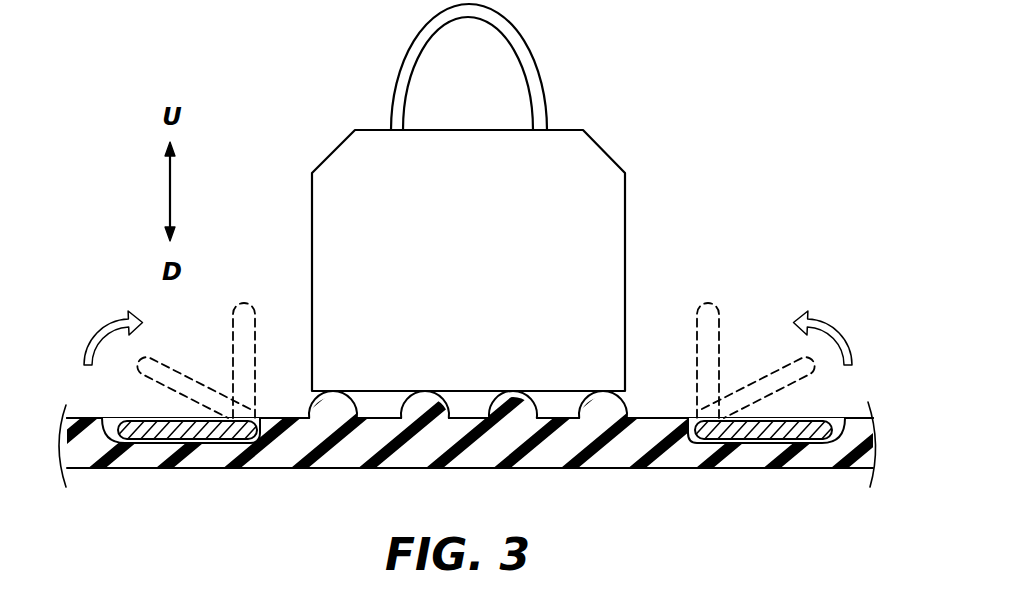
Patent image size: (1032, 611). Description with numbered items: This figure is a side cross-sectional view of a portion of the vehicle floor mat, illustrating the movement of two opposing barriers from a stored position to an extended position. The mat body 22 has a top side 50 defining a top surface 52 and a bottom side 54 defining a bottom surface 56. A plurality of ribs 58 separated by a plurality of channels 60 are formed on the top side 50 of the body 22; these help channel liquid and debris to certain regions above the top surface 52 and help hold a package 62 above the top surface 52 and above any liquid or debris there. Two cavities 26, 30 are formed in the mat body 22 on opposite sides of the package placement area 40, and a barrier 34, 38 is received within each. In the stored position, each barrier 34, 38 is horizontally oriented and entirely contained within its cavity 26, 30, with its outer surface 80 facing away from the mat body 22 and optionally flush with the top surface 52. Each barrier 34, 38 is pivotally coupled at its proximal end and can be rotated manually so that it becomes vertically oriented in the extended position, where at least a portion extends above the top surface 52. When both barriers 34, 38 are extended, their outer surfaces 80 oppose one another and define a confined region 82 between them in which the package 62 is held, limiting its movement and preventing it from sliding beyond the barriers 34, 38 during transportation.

The mat body 22 is at (567, 468).
The cavity 26 is at (236, 442).
The cavity 30 is at (793, 442).
The barrier 34 is at (143, 442).
The barrier 38 is at (723, 442).
The package placement area 40 is at (290, 412).
The top side 50 is at (88, 412).
The top surface 52 is at (862, 420).
The bottom side 54 is at (90, 476).
The bottom surface 56 is at (862, 472).
The ribs 58 is at (338, 398).
The channels 60 is at (558, 405).
The package 62 is at (626, 185).
The outer surface 80 is at (257, 341).
The confined region 82 is at (660, 300).